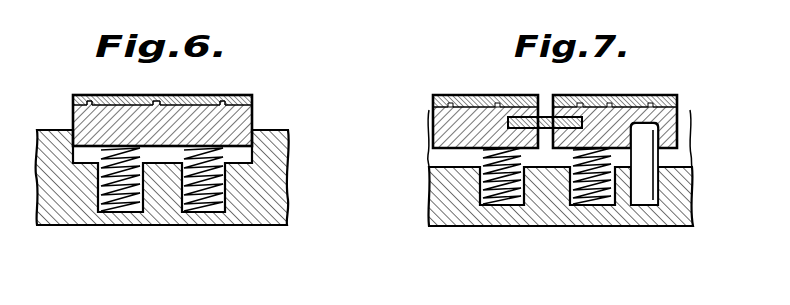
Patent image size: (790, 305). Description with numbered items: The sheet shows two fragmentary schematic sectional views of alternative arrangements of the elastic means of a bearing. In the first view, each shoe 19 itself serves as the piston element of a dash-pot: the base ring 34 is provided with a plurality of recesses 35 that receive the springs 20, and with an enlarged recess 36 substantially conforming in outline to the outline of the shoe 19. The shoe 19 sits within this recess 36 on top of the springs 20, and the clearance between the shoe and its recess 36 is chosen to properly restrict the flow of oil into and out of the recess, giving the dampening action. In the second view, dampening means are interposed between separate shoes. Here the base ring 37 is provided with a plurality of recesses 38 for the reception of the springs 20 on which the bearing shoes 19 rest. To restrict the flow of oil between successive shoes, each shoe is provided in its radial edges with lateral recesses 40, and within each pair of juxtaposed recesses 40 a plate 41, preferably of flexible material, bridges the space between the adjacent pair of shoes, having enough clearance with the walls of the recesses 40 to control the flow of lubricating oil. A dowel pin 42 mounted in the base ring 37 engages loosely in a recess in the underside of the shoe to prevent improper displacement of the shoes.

In FIG. 6, the shoe 19 is at (246, 119).
In FIG. 7, the shoe 19 is at (463, 122).
In FIG. 6, the springs 20 is at (209, 203).
In FIG. 7, the springs 20 is at (516, 204).
In FIG. 6, the base ring 34 is at (269, 215).
In FIG. 6, the recesses 35 is at (175, 203).
In FIG. 6, the enlarged recess 36 is at (194, 116).
In FIG. 7, the base ring 37 is at (653, 225).
In FIG. 7, the recesses 38 is at (603, 204).
In FIG. 7, the lateral recesses 40 is at (538, 99).
In FIG. 7, the plate 41 is at (549, 117).
In FIG. 7, the dowel pin 42 is at (648, 157).